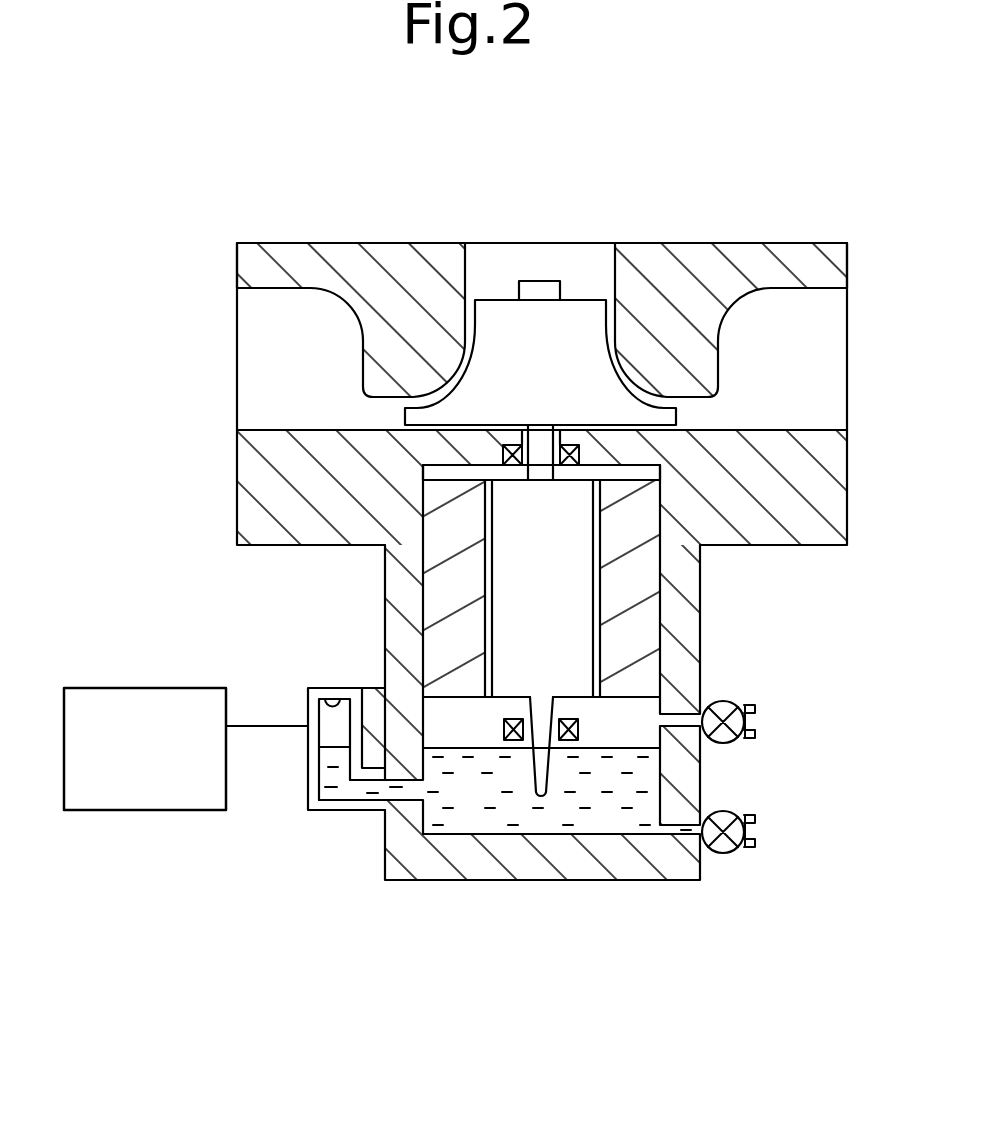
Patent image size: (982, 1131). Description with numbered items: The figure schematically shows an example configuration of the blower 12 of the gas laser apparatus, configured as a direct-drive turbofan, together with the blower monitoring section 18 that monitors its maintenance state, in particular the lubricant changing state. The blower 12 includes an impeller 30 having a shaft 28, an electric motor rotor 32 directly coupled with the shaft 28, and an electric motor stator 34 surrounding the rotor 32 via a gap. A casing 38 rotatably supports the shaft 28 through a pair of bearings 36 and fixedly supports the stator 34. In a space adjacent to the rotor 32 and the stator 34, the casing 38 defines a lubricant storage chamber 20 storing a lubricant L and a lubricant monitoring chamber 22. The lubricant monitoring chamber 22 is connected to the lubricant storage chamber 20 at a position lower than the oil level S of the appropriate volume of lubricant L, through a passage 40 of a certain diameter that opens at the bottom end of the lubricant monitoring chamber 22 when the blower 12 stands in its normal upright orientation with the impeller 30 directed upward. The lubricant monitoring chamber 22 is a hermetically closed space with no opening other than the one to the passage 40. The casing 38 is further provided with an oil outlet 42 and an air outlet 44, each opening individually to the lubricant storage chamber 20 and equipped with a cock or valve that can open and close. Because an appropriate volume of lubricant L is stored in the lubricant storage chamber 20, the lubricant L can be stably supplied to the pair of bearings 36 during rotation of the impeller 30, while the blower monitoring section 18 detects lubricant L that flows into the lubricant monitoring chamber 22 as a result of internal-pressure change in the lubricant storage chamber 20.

The blower 12 is at (702, 243).
The impeller 30 is at (503, 327).
The casing 38 is at (262, 478).
The bearings 36 is at (505, 453).
The electric motor rotor 32 is at (565, 580).
The electric motor stator 34 is at (643, 620).
The shaft 28 is at (545, 713).
The air outlet 44 is at (756, 722).
The oil outlet 42 is at (756, 831).
The oil level S is at (617, 737).
The lubricant L is at (482, 820).
The lubricant storage chamber 20 is at (616, 834).
The passage 40 is at (364, 797).
The lubricant monitoring chamber 22 is at (323, 697).
The blower monitoring section 18 is at (133, 687).